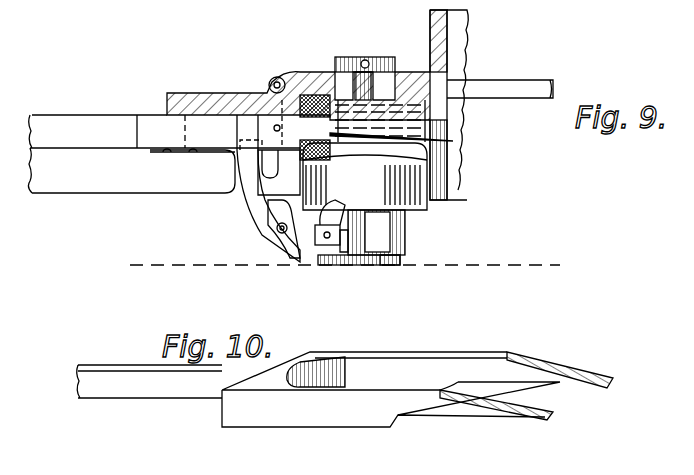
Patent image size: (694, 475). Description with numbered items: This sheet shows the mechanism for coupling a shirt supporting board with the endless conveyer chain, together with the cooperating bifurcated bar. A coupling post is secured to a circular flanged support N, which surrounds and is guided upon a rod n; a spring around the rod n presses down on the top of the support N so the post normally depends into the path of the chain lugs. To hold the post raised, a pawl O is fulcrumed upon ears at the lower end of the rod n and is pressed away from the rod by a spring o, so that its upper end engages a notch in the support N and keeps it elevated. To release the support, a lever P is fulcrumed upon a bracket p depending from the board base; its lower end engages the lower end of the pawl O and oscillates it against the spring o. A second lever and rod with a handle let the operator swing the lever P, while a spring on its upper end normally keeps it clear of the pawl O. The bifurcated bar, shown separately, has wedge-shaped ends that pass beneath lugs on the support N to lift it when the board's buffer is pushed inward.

The lever P is at (262, 212).
The bracket p is at (272, 222).
The circular flanged support N is at (425, 205).
The rod n is at (370, 265).
The pawl O is at (320, 262).
The spring o is at (342, 262).